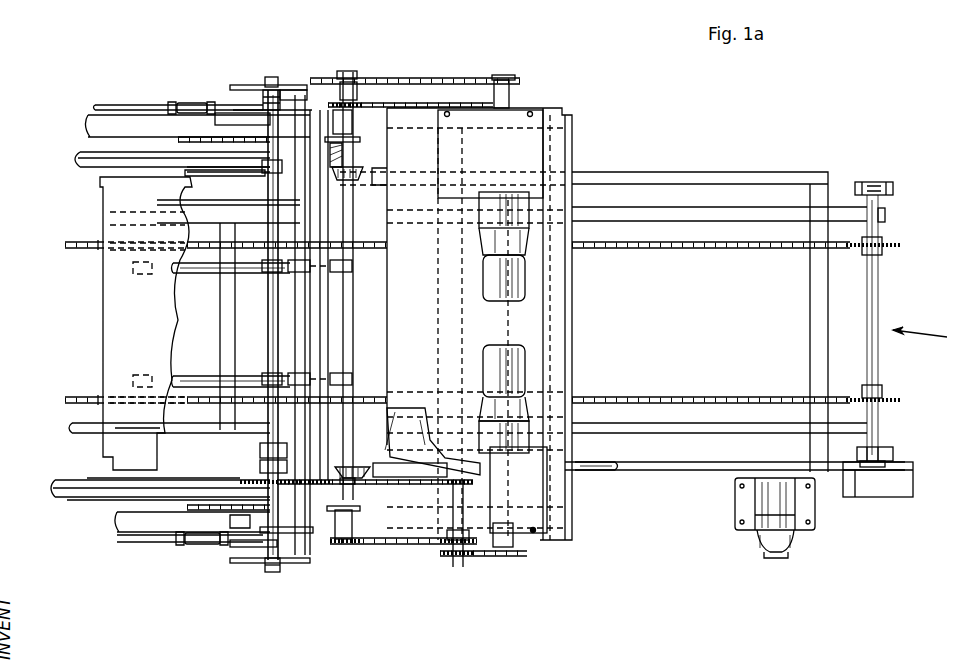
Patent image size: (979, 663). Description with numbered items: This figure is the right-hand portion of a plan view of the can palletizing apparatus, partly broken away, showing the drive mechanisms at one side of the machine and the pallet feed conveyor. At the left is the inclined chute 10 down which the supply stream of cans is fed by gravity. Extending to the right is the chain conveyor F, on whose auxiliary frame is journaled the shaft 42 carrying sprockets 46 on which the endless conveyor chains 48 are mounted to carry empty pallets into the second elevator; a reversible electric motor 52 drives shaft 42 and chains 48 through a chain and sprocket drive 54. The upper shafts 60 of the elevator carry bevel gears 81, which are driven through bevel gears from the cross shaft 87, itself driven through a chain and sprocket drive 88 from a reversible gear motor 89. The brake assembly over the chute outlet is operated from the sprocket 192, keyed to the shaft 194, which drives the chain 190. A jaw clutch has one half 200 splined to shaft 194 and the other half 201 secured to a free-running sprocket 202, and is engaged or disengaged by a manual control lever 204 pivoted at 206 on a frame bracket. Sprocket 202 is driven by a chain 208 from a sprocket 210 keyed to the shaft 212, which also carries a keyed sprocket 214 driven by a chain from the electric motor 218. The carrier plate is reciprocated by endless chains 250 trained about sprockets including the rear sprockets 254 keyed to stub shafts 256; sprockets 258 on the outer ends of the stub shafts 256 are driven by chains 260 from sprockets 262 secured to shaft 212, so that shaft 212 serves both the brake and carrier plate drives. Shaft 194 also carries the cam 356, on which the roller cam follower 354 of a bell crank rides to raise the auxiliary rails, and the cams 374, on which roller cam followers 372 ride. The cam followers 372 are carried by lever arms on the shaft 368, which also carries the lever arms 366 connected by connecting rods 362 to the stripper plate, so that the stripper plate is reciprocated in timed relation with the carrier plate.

The inclined chute 10 is at (112, 280).
The shaft 42 is at (878, 300).
The sprocket 46 is at (893, 247).
The endless conveyor chain 48 is at (685, 249).
The reversible electric motor 52 is at (760, 540).
The chain and sprocket drive 54 is at (838, 473).
The upper shaft 60 is at (74, 156).
The bevel gear 81 is at (333, 165).
The cross shaft 87 is at (333, 268).
The chain and sprocket drive 88 is at (437, 78).
The reversible gear motor 89 is at (530, 272).
The chain 190 is at (217, 170).
The sprocket 192 is at (250, 178).
The shaft 194 is at (272, 302).
The jaw clutch half 200 is at (262, 450).
The jaw clutch half 201 is at (262, 466).
The free-running sprocket 202 is at (245, 482).
The manual control lever 204 is at (608, 472).
The pivot 206 is at (385, 455).
The chain 208 is at (400, 484).
The sprocket 210 is at (475, 485).
The shaft 212 is at (462, 338).
The keyed sprocket 214 is at (470, 558).
The electric motor 218 is at (530, 370).
The endless chain 250 is at (193, 135).
The rear sprocket 254 is at (352, 140).
The stub shaft 256 is at (338, 100).
The sprocket 258 is at (333, 543).
The chain 260 is at (400, 104).
The sprocket 262 is at (440, 546).
The roller cam follower 354 is at (265, 106).
The cam 356 is at (245, 548).
The connecting rod 362 is at (222, 272).
The lever arm 366 is at (333, 270).
The shaft 368 is at (300, 340).
The roller cam follower 372 is at (272, 77).
The cam 374 is at (250, 85).
The chain conveyor F is at (927, 337).